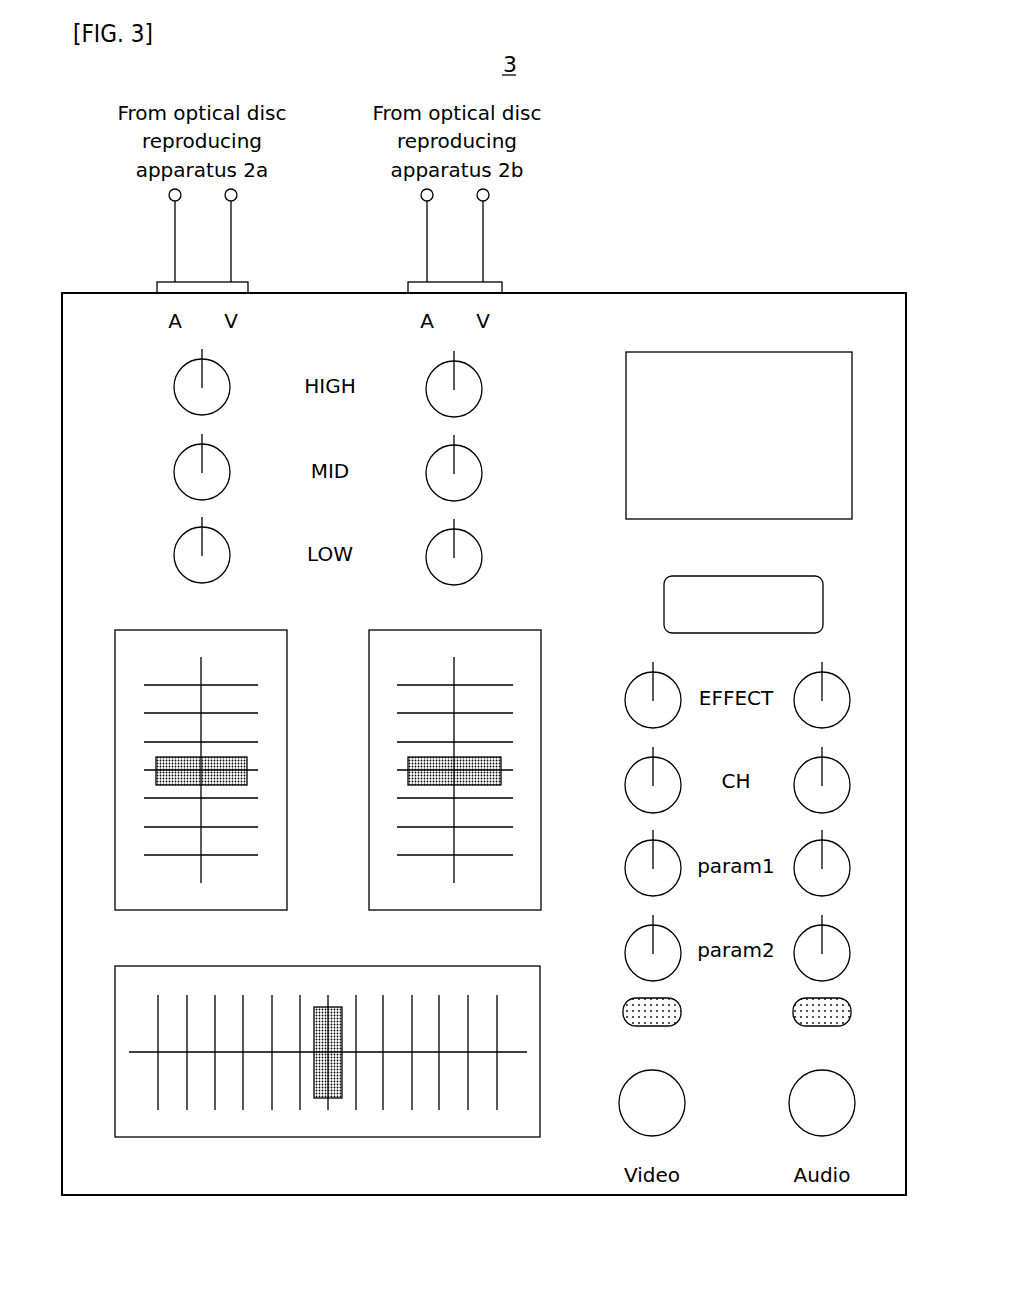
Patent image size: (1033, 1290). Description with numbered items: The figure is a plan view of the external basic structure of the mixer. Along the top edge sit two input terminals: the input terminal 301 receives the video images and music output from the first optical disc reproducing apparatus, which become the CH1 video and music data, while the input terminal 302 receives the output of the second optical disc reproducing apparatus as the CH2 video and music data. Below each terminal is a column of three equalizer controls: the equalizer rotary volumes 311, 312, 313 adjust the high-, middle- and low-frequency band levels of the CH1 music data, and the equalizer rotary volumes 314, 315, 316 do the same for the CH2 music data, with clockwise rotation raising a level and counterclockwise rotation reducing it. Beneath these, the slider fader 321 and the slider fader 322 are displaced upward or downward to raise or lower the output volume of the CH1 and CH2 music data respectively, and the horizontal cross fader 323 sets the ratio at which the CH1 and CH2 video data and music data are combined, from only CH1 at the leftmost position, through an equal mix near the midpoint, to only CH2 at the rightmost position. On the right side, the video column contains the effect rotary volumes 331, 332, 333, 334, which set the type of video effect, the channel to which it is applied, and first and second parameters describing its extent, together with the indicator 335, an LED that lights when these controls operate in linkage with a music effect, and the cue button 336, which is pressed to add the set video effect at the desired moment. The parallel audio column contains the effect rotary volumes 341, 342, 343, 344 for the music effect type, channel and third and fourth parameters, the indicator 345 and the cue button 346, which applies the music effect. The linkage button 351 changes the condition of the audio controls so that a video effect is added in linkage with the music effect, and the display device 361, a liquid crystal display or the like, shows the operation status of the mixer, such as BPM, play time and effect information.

The input terminal 301 is at (175, 289).
The input terminal 302 is at (492, 293).
The equalizer rotary volume 311 is at (176, 384).
The equalizer rotary volume 312 is at (176, 469).
The equalizer rotary volume 313 is at (176, 552).
The equalizer rotary volume 314 is at (482, 392).
The equalizer rotary volume 315 is at (482, 476).
The equalizer rotary volume 316 is at (482, 560).
The slider fader 321 is at (215, 773).
The slider fader 322 is at (433, 772).
The cross fader 323 is at (327, 1055).
The effect rotary volume 331 is at (634, 679).
The effect rotary volume 332 is at (634, 764).
The effect rotary volume 333 is at (634, 847).
The effect rotary volume 334 is at (634, 932).
The indicator 335 is at (636, 1013).
The cue button 336 is at (637, 1081).
The effect rotary volume 341 is at (833, 677).
The effect rotary volume 342 is at (833, 762).
The effect rotary volume 343 is at (833, 845).
The effect rotary volume 344 is at (833, 930).
The indicator 345 is at (833, 1014).
The cue button 346 is at (832, 1080).
The linkage button 351 is at (739, 576).
The display device 361 is at (693, 352).